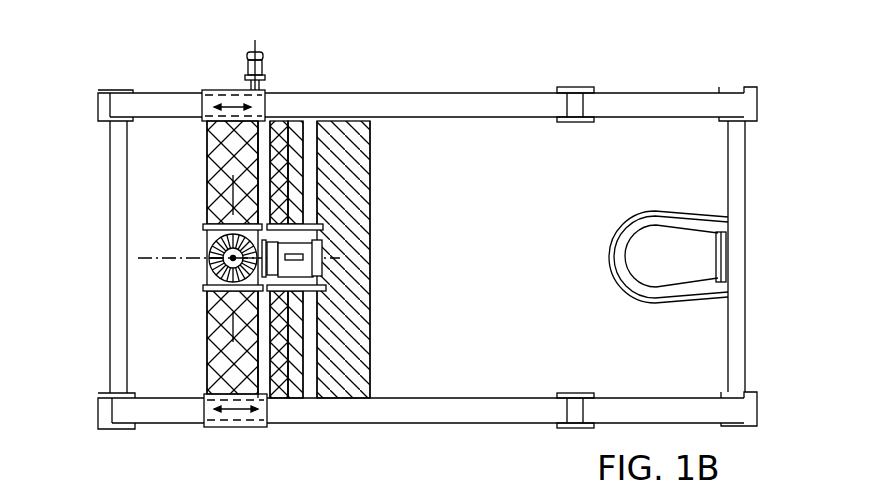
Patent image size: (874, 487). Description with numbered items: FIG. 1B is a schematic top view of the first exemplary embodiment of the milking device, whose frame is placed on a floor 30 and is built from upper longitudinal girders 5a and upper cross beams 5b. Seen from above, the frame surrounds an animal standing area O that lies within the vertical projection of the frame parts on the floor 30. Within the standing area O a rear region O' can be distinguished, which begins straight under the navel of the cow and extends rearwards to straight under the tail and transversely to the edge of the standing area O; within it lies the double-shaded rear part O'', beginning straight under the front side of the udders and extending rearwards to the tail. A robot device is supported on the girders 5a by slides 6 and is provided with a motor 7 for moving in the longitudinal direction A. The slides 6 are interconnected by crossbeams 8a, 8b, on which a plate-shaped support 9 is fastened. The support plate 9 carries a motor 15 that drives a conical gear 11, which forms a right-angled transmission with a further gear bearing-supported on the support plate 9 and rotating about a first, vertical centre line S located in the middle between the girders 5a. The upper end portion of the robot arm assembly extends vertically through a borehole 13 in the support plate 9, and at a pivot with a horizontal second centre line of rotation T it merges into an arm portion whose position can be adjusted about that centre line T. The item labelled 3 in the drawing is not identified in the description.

The floor 30 is at (455, 31).
The upper longitudinal girders 5a is at (505, 107).
The upper cross beams 5b is at (117, 274).
The slides 6 is at (208, 98).
The motor 7 is at (258, 68).
The crossbeam 8a is at (263, 141).
The crossbeam 8b is at (310, 141).
The support plate 9 is at (307, 278).
The rear part O'' is at (222, 257).
The rear region O' is at (377, 259).
The animal standing area O is at (315, 224).
The conical gear 11 is at (214, 281).
The borehole 13 is at (218, 248).
The motor 15 is at (307, 266).
The centre line S is at (212, 264).
The centre line of rotation T is at (234, 327).
The loop member 3 is at (672, 266).
The longitudinal direction A is at (236, 412).